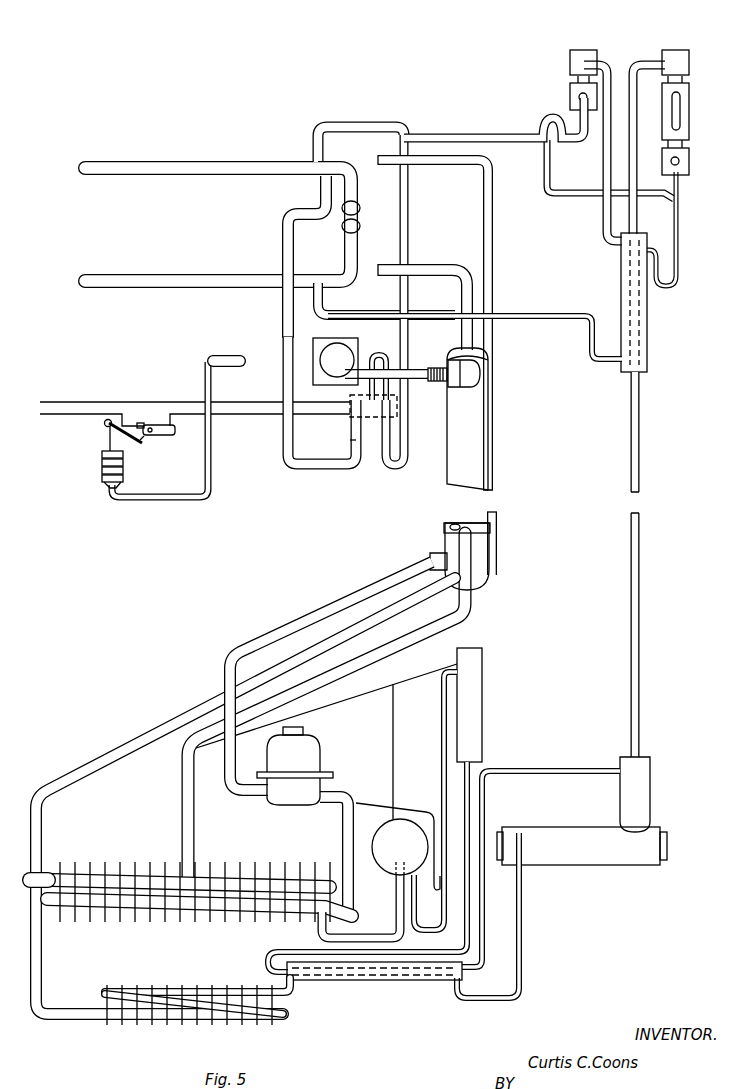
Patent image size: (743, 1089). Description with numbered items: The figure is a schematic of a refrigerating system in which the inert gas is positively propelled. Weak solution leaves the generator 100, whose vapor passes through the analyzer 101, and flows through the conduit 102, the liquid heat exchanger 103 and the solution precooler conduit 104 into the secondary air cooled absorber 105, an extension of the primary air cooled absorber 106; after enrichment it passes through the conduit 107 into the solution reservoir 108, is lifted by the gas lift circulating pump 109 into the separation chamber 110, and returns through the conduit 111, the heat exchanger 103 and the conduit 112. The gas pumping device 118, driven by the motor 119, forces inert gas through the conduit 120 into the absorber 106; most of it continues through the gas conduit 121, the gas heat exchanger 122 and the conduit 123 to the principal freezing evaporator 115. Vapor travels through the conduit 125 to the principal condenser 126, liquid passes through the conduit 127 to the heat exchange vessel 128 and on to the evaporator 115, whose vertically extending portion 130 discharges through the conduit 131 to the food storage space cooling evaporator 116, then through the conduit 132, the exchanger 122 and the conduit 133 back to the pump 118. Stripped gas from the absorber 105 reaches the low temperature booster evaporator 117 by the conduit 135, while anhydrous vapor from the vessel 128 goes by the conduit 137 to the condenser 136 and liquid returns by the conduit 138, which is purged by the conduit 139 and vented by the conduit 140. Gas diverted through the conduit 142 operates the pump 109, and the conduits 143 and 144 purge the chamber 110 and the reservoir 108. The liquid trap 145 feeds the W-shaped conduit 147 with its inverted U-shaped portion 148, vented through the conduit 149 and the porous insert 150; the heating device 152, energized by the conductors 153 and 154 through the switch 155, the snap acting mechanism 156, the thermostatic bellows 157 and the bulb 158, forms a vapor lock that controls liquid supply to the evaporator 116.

The generator 100 is at (652, 866).
The analyzer 101 is at (651, 797).
The conduit 102 is at (500, 1000).
The liquid heat exchanger 103 is at (388, 981).
The solution precooler conduit 104 is at (182, 992).
The secondary air cooled absorber 105 is at (56, 874).
The primary air cooled absorber 106 is at (244, 880).
The conduit 107 is at (363, 916).
The solution reservoir 108 is at (400, 847).
The gas lift circulating pump 109 is at (442, 775).
The separation chamber 110 is at (482, 711).
The conduit 111 is at (470, 800).
The conduit 112 is at (525, 769).
The principal freezing evaporator 115 is at (163, 279).
The food storage space cooling evaporator 116 is at (320, 362).
The low temperature booster evaporator 117 is at (178, 166).
The gas pumping device 118 is at (286, 811).
The hermetically sealed electrical motor 119 is at (312, 752).
The conduit 120 is at (345, 838).
The gas conduit 121 is at (437, 641).
The gas heat exchanger 122 is at (452, 541).
The conduit 123 is at (430, 268).
The conduit 125 is at (640, 646).
The principal condenser 126 is at (689, 104).
The conduit 127 is at (678, 258).
The heat exchange vessel 128 is at (645, 353).
The vertically extending portion 130 is at (344, 236).
The conduit 131 is at (284, 219).
The conduit 132 is at (399, 374).
The conduit 133 is at (318, 613).
The conduit 135 is at (133, 756).
The condenser 136 is at (578, 50).
The conduit 137 is at (609, 66).
The conduit 138 is at (463, 134).
The conduit 139 is at (562, 197).
The conduit 140 is at (342, 127).
The conduit 142 is at (381, 808).
The conduit 143 is at (420, 676).
The conduit 144 is at (394, 722).
The liquid trap 145 is at (284, 311).
The W-shaped conduit 147 is at (284, 433).
The inverted U-shaped central portion 148 is at (351, 439).
The vent conduit 149 is at (375, 359).
The porous metallic insert 150 is at (388, 358).
The electric heating device 152 is at (350, 413).
The electrical conductor 153 is at (104, 402).
The electrical conductor 154 is at (78, 417).
The switch mechanism 155 is at (162, 434).
The snap acting mechanism 156 is at (128, 446).
The thermostatic bellows 157 is at (102, 462).
The actuating bulb 158 is at (224, 367).